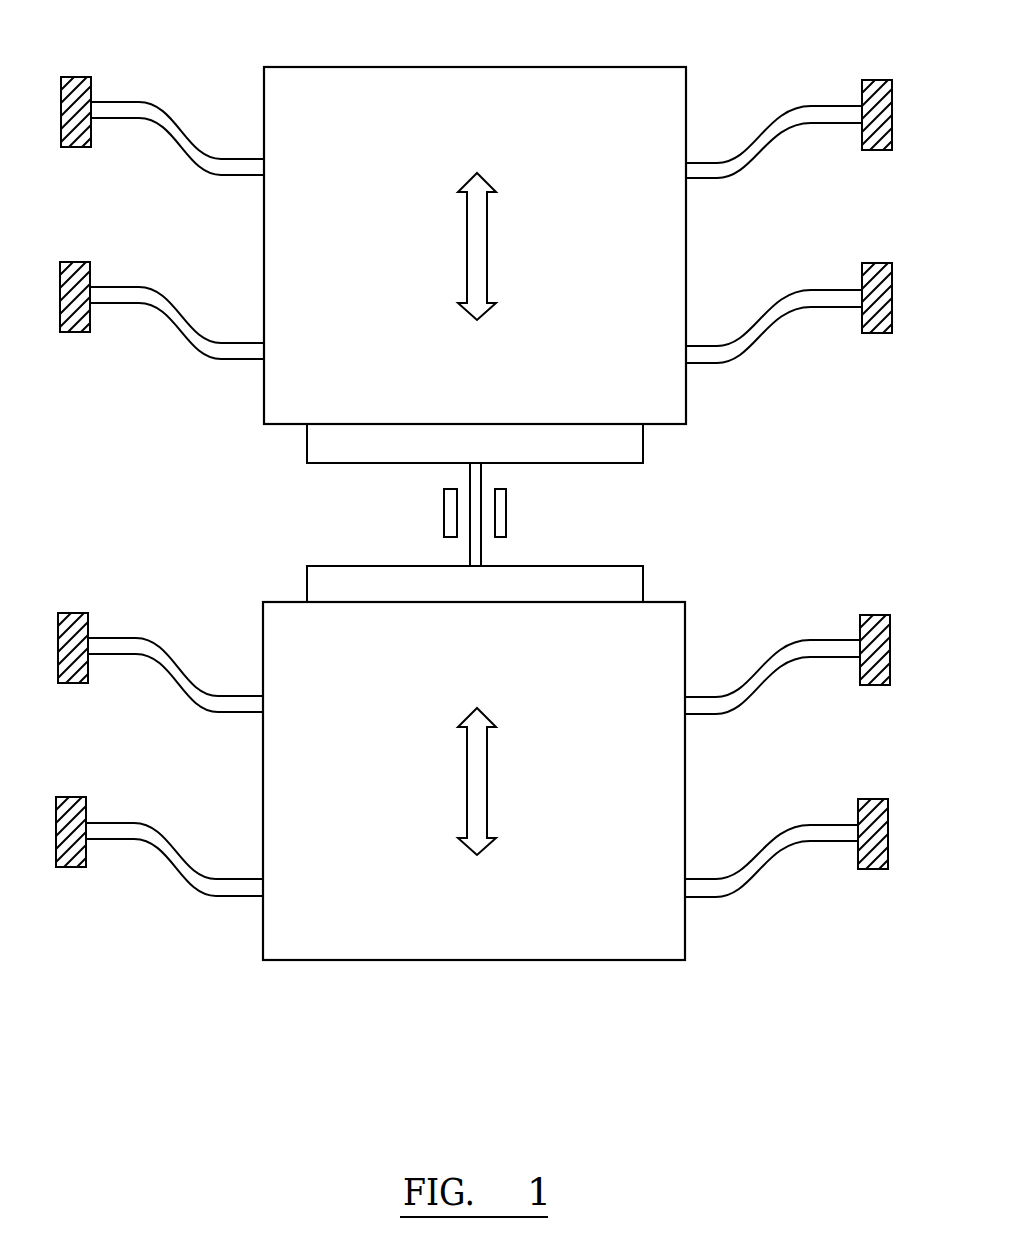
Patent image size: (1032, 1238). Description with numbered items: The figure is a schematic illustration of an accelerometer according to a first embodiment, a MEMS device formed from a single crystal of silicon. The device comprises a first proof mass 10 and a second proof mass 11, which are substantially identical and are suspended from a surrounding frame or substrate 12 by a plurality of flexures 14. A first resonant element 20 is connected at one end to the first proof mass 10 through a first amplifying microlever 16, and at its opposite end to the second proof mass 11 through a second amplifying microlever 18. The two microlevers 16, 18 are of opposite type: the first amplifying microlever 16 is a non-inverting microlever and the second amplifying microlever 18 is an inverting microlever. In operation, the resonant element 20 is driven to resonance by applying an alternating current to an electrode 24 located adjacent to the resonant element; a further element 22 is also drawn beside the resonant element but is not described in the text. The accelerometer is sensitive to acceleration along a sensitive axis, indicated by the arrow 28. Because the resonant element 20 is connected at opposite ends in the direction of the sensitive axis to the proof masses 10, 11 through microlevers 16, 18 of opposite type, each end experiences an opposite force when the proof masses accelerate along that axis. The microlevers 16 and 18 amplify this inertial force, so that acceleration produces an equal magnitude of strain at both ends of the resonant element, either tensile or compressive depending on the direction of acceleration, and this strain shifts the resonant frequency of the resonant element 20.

The first proof mass 10 is at (683, 920).
The second proof mass 11 is at (665, 386).
The frame or substrate 12 is at (77, 92).
The flexures 14 is at (156, 117).
The first amplifying microlever 16 is at (635, 580).
The second amplifying microlever 18 is at (627, 450).
The first resonant element 20 is at (470, 553).
The bearing 22 is at (443, 507).
The electrode 24 is at (507, 507).
The arrow 28 is at (479, 250).